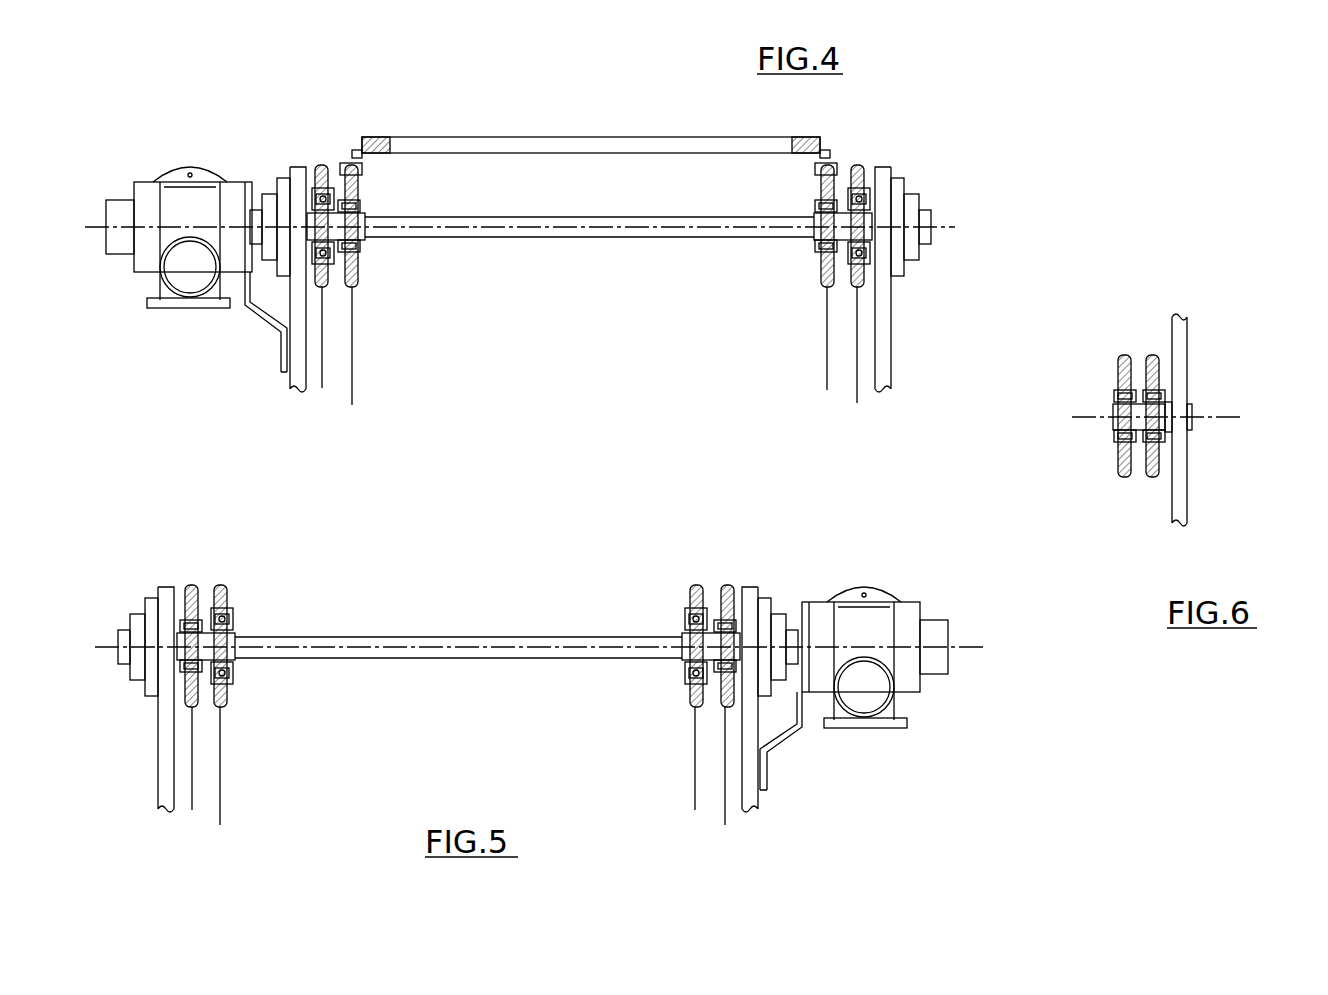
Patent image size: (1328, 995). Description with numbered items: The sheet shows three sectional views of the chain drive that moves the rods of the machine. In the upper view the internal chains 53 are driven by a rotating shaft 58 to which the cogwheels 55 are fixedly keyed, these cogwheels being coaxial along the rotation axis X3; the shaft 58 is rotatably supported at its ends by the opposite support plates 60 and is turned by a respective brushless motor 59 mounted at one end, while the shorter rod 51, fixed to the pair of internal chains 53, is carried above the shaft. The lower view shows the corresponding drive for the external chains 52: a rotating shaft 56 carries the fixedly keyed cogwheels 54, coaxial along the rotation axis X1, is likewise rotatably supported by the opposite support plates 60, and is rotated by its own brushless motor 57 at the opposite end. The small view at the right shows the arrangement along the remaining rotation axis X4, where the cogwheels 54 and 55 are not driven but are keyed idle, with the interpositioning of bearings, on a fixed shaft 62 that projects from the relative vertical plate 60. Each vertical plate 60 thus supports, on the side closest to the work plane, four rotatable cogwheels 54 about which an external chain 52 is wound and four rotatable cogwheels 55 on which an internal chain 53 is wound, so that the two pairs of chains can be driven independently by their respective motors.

In FIG. 4, the rod 51 is at (563, 137).
In FIG. 4, the external chain 52 is at (323, 375).
In FIG. 5, the external chain 52 is at (192, 792).
In FIG. 4, the internal chain 53 is at (353, 365).
In FIG. 5, the internal chain 53 is at (220, 753).
In FIG. 4, the cogwheel 54 is at (309, 168).
In FIG. 5, the cogwheel 54 is at (178, 597).
In FIG. 4, the cogwheel 55 is at (358, 270).
In FIG. 5, the cogwheel 55 is at (235, 598).
In FIG. 6, the cogwheel 55 is at (1123, 378).
In FIG. 5, the rotating shaft 56 is at (447, 637).
In FIG. 6, the rotating shaft 56 is at (1150, 373).
In FIG. 5, the brushless motor 57 is at (873, 600).
In FIG. 4, the rotating shaft 58 is at (563, 230).
In FIG. 4, the brushless motor 59 is at (187, 170).
In FIG. 6, the vertical plate 60 is at (1180, 477).
In FIG. 6, the fixed shaft 62 is at (1132, 422).
In FIG. 5, the rotation axis X1 is at (963, 647).
In FIG. 4, the rotation axis X3 is at (942, 227).
In FIG. 6, the rotation axis X4 is at (1210, 417).